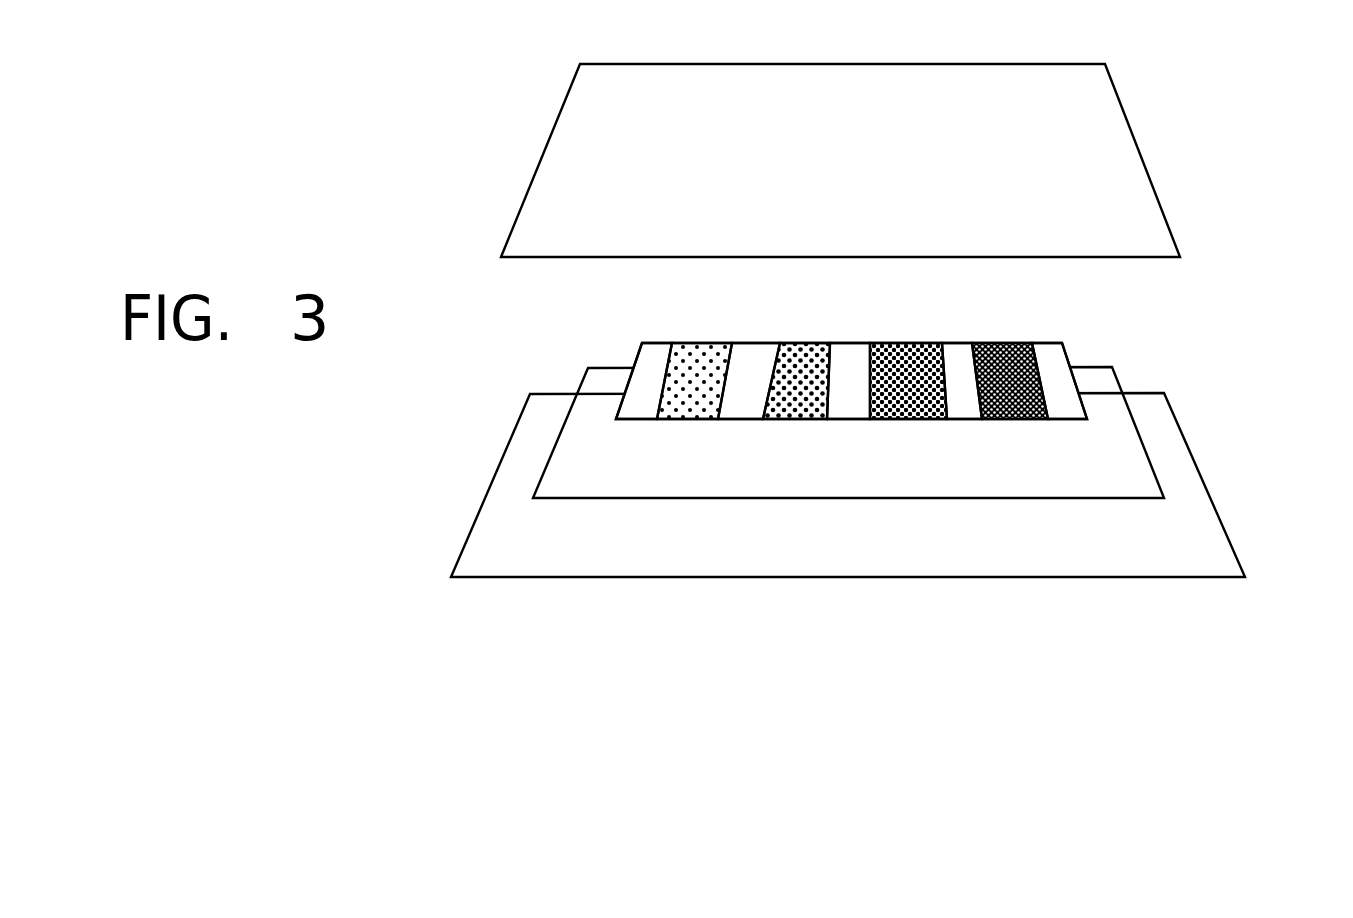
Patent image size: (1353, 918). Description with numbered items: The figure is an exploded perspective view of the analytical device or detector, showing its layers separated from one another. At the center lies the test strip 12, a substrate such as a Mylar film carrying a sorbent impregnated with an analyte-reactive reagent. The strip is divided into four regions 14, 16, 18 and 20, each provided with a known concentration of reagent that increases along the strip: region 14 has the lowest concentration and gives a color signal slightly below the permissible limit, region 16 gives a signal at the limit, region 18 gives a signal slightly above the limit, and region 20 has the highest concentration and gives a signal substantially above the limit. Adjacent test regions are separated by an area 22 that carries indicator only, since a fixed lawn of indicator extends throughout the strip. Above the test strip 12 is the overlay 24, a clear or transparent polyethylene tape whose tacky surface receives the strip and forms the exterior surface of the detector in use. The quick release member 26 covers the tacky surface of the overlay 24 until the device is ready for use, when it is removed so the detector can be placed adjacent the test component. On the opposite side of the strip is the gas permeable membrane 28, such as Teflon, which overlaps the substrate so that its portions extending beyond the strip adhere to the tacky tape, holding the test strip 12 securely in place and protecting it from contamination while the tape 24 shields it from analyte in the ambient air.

The test strip 12 is at (849, 370).
The first test region 14 is at (675, 408).
The second test region 16 is at (793, 408).
The third test region 18 is at (903, 405).
The fourth test region 20 is at (1007, 407).
The indicator-only area 22 is at (1093, 300).
The overlay 24 is at (1090, 153).
The quick release member 26 is at (1180, 523).
The gas permeable membrane 28 is at (1097, 397).